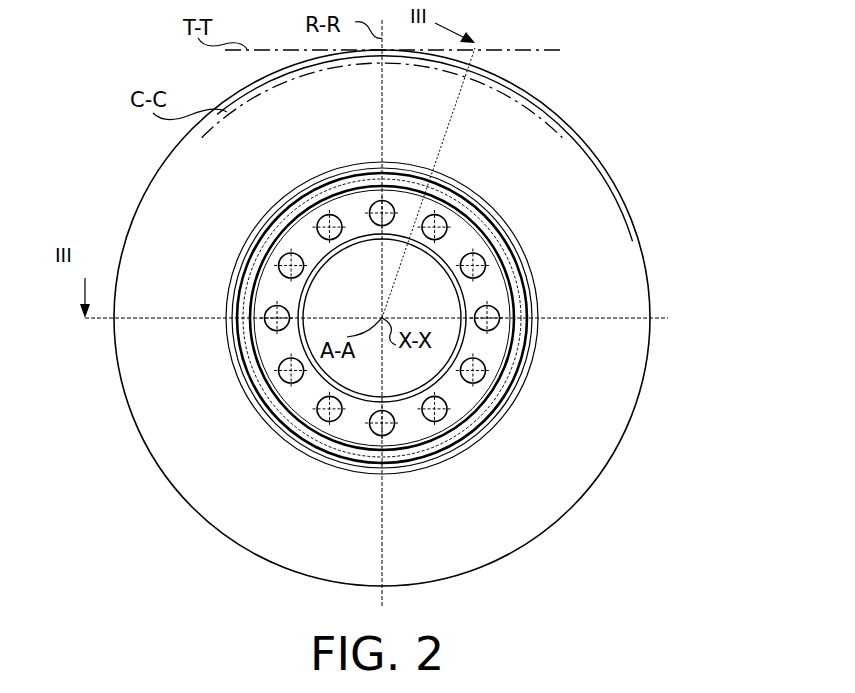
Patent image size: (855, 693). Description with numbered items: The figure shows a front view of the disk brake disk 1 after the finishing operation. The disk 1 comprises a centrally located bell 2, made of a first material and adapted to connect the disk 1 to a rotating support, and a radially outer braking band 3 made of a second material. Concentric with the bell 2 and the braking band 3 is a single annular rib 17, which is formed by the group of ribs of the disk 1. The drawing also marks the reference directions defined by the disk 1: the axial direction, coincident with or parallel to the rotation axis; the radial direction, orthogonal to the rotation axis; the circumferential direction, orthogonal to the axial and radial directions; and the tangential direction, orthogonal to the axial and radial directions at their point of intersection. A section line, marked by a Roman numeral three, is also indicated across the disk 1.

The disk 1 is at (718, 118).
The bell 2 is at (488, 287).
The braking band 3 is at (600, 232).
The single annular rib 17 is at (517, 247).